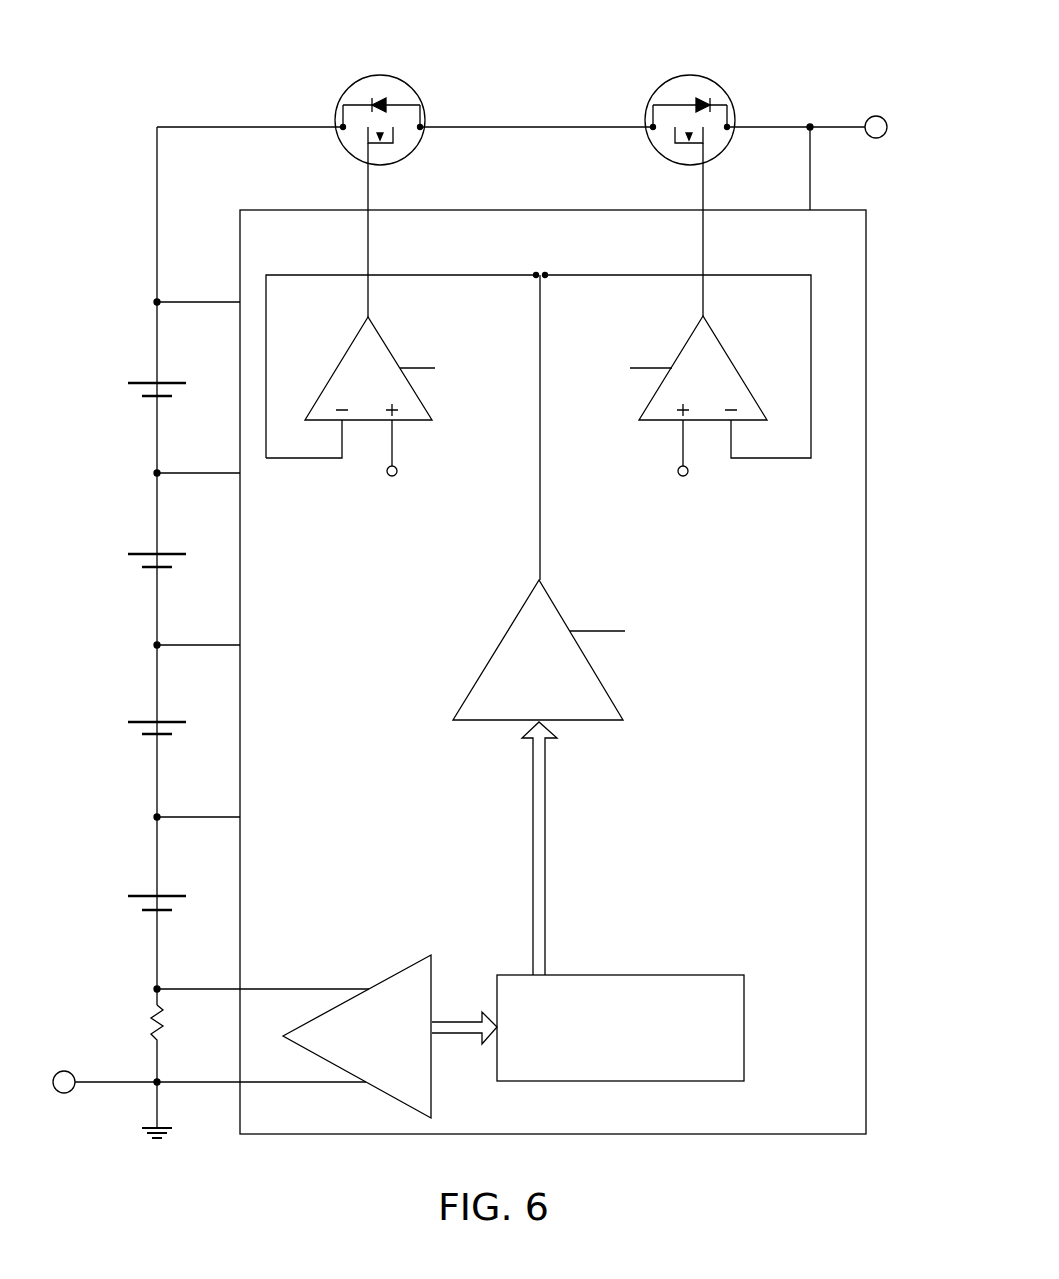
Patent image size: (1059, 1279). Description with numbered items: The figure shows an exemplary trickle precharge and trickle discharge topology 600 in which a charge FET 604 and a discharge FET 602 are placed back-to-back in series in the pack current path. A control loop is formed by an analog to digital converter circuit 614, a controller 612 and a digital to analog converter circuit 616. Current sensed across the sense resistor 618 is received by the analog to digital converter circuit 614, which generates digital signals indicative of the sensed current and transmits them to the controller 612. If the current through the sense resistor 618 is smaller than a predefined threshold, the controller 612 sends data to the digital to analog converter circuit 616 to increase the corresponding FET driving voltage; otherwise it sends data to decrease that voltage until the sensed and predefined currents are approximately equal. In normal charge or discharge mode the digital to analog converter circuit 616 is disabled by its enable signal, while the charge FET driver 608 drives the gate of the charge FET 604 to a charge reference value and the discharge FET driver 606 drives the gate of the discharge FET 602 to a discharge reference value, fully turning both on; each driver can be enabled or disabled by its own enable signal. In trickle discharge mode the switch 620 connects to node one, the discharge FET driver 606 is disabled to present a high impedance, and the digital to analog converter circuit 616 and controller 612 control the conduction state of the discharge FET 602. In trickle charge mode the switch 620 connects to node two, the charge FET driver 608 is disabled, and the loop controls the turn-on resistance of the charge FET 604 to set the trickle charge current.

The trickle precharge and trickle discharge topology 600 is at (160, 70).
The discharge FET 602 is at (422, 103).
The charge FET 604 is at (648, 110).
The discharge FET driver 606 is at (338, 366).
The charge FET driver 608 is at (740, 366).
The controller 612 is at (620, 973).
The analog to digital converter circuit 614 is at (380, 974).
The digital to analog converter circuit 616 is at (558, 606).
The sense resistor Rsens 618 is at (150, 1013).
The switch K1 620 is at (538, 272).